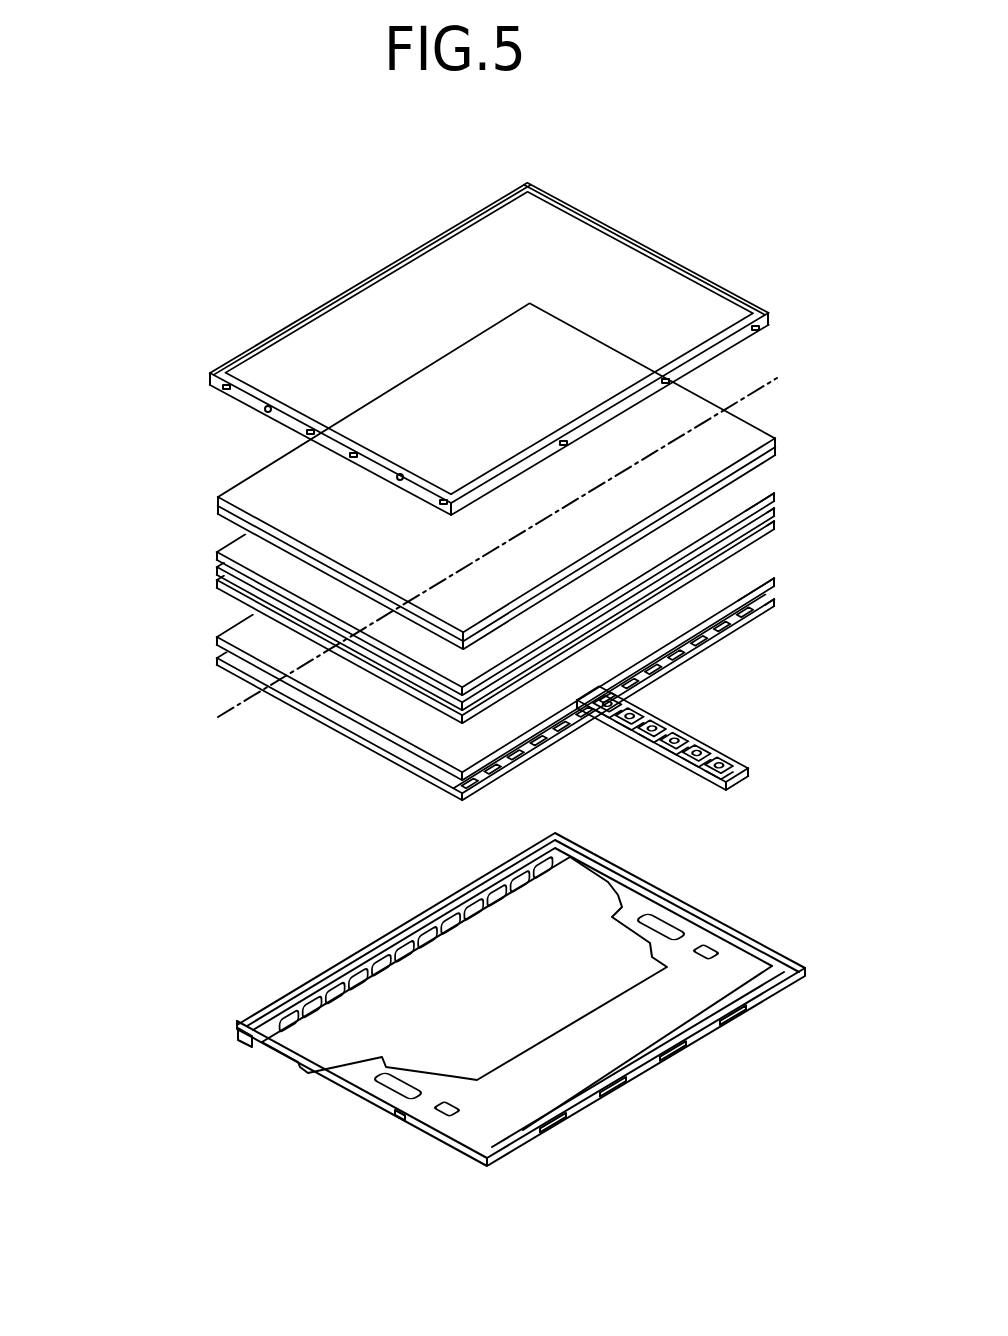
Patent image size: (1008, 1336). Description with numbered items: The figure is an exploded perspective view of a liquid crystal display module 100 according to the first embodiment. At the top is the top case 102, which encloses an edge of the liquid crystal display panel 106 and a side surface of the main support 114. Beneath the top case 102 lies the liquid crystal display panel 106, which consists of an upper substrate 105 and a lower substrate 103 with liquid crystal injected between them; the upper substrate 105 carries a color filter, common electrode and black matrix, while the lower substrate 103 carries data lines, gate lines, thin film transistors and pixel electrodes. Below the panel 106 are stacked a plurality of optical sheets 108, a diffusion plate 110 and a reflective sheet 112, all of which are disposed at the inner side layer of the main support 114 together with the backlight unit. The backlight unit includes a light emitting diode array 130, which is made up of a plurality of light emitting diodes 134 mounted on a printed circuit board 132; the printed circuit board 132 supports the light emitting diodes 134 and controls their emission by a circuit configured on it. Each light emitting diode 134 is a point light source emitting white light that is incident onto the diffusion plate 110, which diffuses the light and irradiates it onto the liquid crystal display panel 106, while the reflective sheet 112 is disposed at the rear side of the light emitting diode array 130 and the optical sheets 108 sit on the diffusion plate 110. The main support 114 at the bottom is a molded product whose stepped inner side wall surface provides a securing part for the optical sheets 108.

The liquid crystal display module 100 is at (757, 173).
The top case 102 is at (748, 298).
The lower substrate 103 is at (216, 511).
The upper substrate 105 is at (216, 499).
The liquid crystal display panel 106 is at (415, 476).
The optical sheets 108 is at (772, 514).
The diffusion plate 110 is at (778, 578).
The reflective sheet 112 is at (778, 602).
The main support 114 is at (731, 930).
The light emitting diode array 130 is at (734, 738).
The printed circuit board 132 is at (752, 770).
The light emitting diodes 134 is at (738, 754).